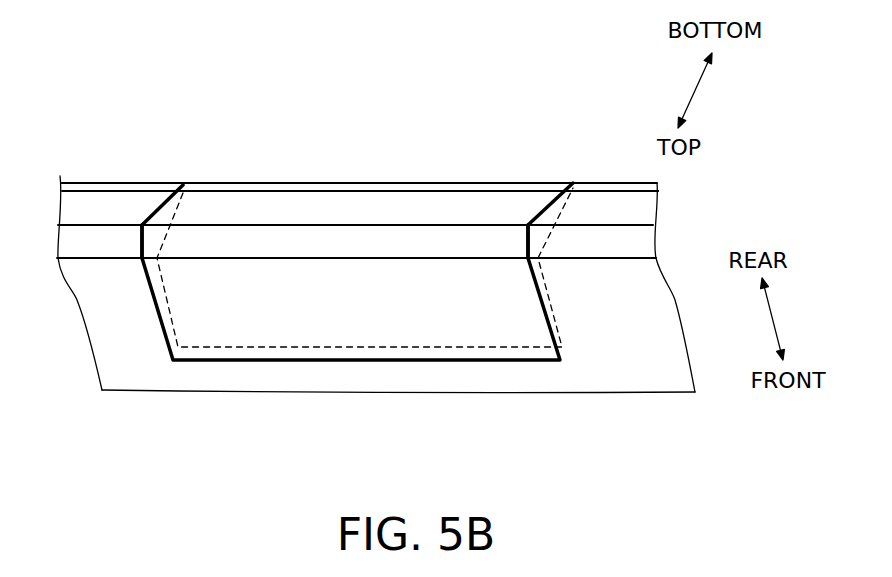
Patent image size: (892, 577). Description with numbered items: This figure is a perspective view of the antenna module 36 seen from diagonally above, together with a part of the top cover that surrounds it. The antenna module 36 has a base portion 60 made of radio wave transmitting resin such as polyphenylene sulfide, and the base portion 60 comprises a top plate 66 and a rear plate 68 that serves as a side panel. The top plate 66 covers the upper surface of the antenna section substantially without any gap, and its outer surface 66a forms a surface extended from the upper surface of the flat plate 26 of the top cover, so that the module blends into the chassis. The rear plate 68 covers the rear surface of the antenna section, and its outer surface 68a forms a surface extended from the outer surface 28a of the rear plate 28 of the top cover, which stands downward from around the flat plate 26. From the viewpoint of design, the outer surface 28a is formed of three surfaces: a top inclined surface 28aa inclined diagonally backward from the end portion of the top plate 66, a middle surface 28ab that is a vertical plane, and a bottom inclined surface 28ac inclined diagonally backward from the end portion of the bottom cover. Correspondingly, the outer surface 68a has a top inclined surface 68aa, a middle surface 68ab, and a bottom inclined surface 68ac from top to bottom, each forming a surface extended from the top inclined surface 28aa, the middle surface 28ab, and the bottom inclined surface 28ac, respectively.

The flat plate 26 is at (130, 317).
The rear plate 28 is at (595, 205).
The outer surface of the rear plate 28a is at (267, 83).
The top inclined surface 28aa is at (78, 237).
The middle surface 28ab is at (107, 210).
The bottom inclined surface 28ac is at (139, 188).
The antenna module 36 is at (487, 163).
The base portion 60 is at (635, 83).
The top plate 66 is at (486, 282).
The outer surface of the top plate 66a is at (518, 317).
The rear plate 68 is at (493, 210).
The outer surface of the rear plate 68a is at (520, 83).
The top inclined surface 68aa is at (332, 235).
The middle surface 68ab is at (362, 210).
The bottom inclined surface 68ac is at (395, 188).